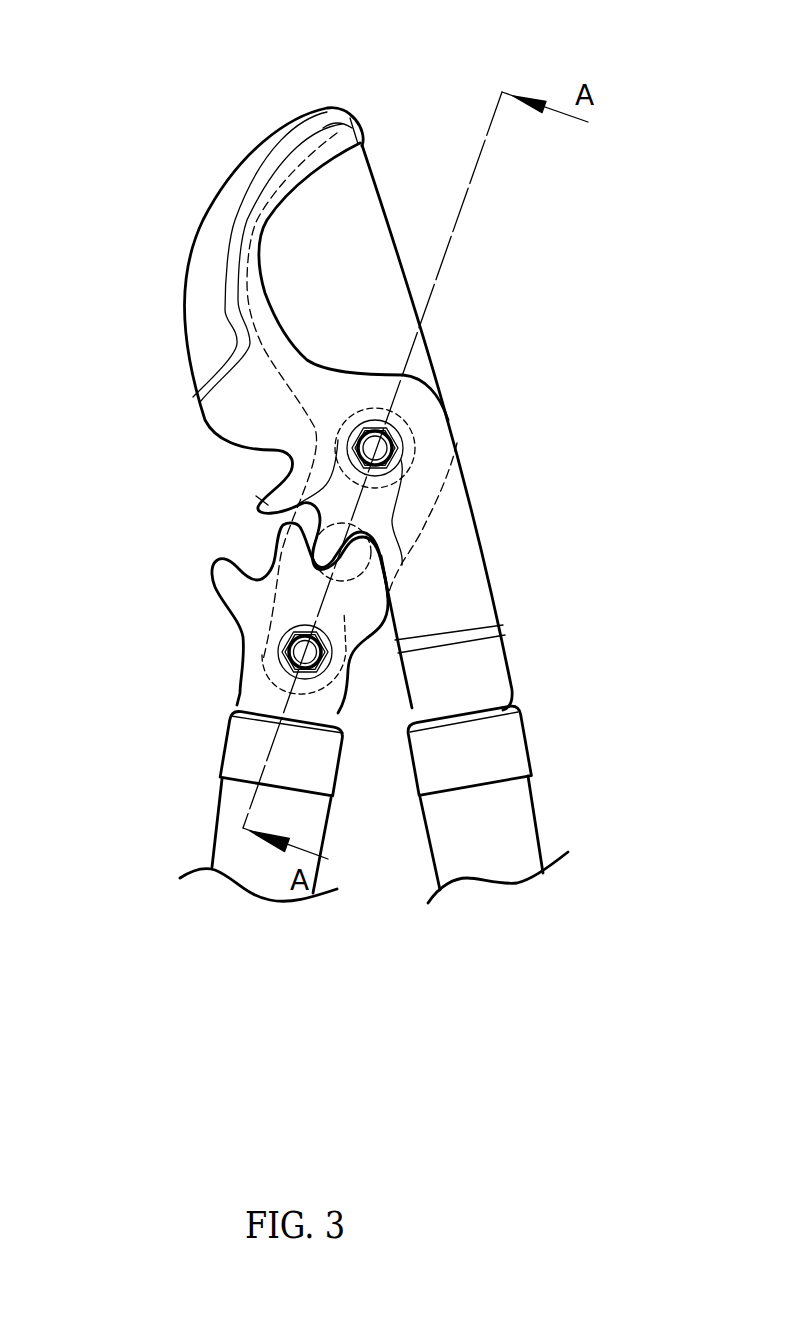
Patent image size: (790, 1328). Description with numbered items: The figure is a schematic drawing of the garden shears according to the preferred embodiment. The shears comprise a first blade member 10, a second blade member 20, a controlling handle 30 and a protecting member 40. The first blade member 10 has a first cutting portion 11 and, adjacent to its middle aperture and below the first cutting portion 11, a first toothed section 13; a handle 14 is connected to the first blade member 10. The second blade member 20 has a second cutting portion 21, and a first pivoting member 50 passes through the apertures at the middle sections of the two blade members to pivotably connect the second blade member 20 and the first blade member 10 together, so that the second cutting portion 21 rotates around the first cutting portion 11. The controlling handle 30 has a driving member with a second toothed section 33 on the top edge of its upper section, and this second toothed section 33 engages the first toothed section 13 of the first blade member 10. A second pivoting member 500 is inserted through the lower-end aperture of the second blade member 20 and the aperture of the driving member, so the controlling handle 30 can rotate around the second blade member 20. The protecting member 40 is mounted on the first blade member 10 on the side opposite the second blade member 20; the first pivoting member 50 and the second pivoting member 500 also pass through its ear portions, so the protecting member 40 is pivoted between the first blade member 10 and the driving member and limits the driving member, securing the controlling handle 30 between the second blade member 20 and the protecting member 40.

The first blade member 10 is at (247, 153).
The first cutting portion 11 is at (263, 252).
The first toothed section 13 is at (262, 500).
The handle 14 is at (530, 837).
The second blade member 20 is at (408, 280).
The second cutting portion 21 is at (327, 132).
The controlling handle 30 is at (206, 845).
The second toothed section 33 is at (223, 583).
The protecting member 40 is at (400, 556).
The first pivoting member 50 is at (400, 440).
The second pivoting member 500 is at (273, 660).